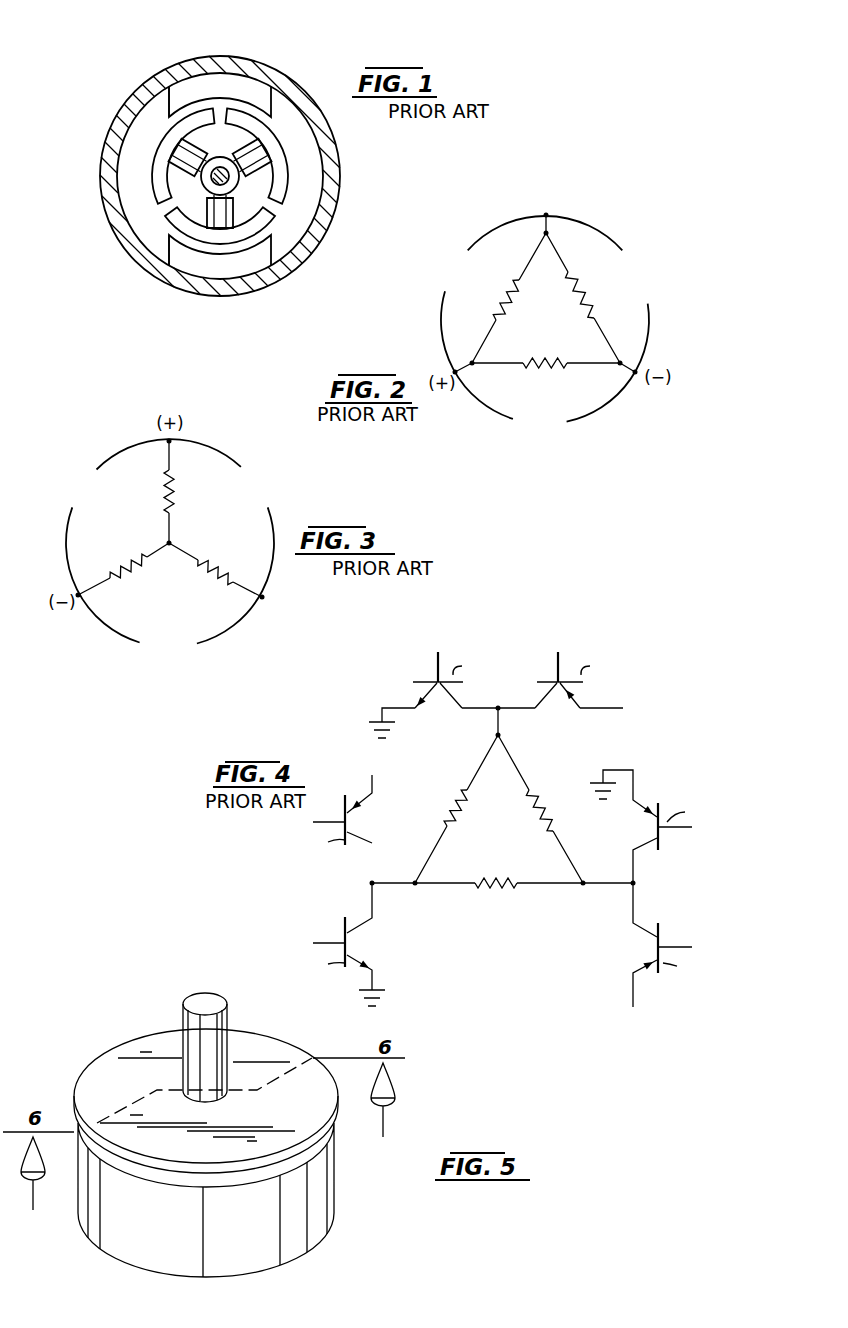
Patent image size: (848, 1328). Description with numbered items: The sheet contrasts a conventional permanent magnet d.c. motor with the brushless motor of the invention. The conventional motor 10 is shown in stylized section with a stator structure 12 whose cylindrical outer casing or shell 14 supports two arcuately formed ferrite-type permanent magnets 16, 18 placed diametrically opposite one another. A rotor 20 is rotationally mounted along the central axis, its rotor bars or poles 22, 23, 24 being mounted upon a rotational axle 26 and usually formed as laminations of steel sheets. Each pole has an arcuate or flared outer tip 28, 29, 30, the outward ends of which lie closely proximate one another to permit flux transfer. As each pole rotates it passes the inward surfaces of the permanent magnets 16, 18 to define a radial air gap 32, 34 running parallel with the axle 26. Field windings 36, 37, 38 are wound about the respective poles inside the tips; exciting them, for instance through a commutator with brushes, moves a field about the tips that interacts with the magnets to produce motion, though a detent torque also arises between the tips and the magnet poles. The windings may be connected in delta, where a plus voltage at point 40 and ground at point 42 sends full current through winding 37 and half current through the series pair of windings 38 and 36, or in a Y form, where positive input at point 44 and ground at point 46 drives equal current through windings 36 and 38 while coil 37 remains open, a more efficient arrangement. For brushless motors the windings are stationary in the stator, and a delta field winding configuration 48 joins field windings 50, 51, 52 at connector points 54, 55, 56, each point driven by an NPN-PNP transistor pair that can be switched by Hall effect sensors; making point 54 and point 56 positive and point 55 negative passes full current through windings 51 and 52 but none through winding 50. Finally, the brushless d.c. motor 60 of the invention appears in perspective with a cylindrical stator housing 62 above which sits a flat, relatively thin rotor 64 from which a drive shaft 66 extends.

In FIG. 1, the d.c. motor 10 is at (306, 68).
In FIG. 1, the stator structure 12 is at (330, 237).
In FIG. 1, the cylindrical outer casing or shell 14 is at (339, 155).
In FIG. 1, the permanent magnet 16 is at (233, 266).
In FIG. 1, the permanent magnet 18 is at (222, 82).
In FIG. 1, the rotor 20 is at (222, 191).
In FIG. 1, the rotor pole 22 is at (217, 162).
In FIG. 1, the rotor pole 23 is at (207, 210).
In FIG. 1, the rotor pole 24 is at (242, 180).
In FIG. 1, the rotational axle 26 is at (206, 168).
In FIG. 1, the pole tip 28 is at (140, 177).
In FIG. 2, the pole tip 28 is at (597, 230).
In FIG. 3, the pole tip 28 is at (208, 448).
In FIG. 1, the pole tip 29 is at (293, 250).
In FIG. 2, the pole tip 29 is at (650, 341).
In FIG. 3, the pole tip 29 is at (272, 582).
In FIG. 1, the pole tip 30 is at (291, 128).
In FIG. 2, the pole tip 30 is at (440, 328).
In FIG. 3, the pole tip 30 is at (68, 560).
In FIG. 1, the radial air gap 32 is at (170, 112).
In FIG. 1, the radial air gap 34 is at (170, 233).
In FIG. 1, the field winding 36 is at (176, 177).
In FIG. 2, the field winding 36 is at (577, 274).
In FIG. 3, the field winding 36 is at (174, 500).
In FIG. 1, the field winding 37 is at (226, 214).
In FIG. 2, the field winding 37 is at (523, 362).
In FIG. 3, the field winding 37 is at (223, 573).
In FIG. 1, the field winding 38 is at (252, 158).
In FIG. 2, the field winding 38 is at (497, 322).
In FIG. 3, the field winding 38 is at (132, 573).
In FIG. 2, the point 40 is at (463, 372).
In FIG. 2, the point 42 is at (627, 370).
In FIG. 3, the point 44 is at (167, 448).
In FIG. 3, the point 46 is at (85, 593).
In FIG. 4, the field winding configuration 48 is at (505, 838).
In FIG. 4, the field winding 50 is at (462, 797).
In FIG. 4, the field winding 51 is at (547, 800).
In FIG. 4, the field winding 52 is at (495, 880).
In FIG. 4, the connector point 54 is at (503, 727).
In FIG. 4, the connector point 55 is at (607, 885).
In FIG. 4, the connector point 56 is at (400, 887).
In FIG. 5, the brushless d.c. motor 60 is at (229, 1121).
In FIG. 5, the cylindrical stator housing 62 is at (308, 1210).
In FIG. 5, the rotor 64 is at (283, 1038).
In FIG. 5, the drive shaft 66 is at (205, 1005).